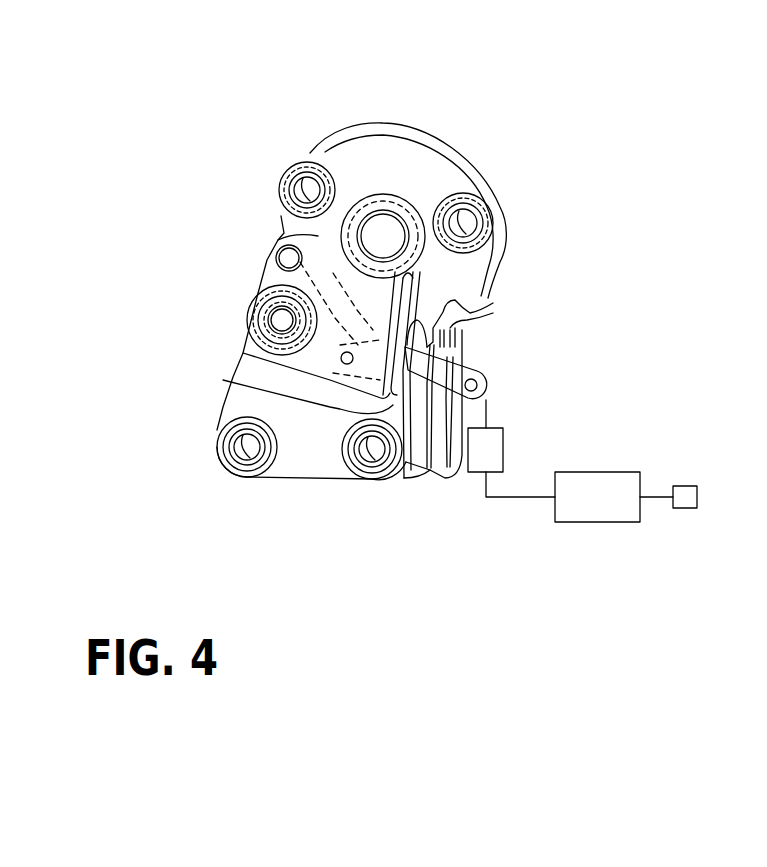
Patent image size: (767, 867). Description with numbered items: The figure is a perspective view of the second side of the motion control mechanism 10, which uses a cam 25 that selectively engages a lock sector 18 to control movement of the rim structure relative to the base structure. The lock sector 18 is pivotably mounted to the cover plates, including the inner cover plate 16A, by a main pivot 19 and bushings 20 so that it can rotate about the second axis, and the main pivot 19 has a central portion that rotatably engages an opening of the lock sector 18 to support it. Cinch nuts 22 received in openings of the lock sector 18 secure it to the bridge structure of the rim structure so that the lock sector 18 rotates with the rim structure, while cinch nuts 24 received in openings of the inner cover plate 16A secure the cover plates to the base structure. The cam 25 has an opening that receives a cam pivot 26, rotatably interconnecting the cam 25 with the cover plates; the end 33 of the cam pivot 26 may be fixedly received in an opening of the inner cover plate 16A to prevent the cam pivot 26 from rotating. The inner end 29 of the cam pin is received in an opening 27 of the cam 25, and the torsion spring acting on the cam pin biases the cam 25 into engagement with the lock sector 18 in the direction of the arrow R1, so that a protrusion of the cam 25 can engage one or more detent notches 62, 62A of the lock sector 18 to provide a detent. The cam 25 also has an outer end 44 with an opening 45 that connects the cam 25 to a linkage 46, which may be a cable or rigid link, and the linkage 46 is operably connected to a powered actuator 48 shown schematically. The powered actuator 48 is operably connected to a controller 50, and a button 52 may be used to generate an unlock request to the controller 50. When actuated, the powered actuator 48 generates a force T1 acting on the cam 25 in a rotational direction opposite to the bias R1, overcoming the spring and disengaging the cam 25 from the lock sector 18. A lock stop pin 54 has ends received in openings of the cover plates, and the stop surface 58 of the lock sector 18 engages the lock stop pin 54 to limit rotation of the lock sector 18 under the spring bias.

The motion control mechanism 10 is at (535, 237).
The inner cover plate 16A is at (290, 478).
The lock sector 18 is at (432, 128).
The main pivot 19 is at (397, 230).
The bushings 20 is at (372, 192).
The cinch nuts 22 is at (292, 185).
The cinch nuts 24 is at (218, 440).
The cam 25 is at (485, 368).
The cam pivot 26 is at (272, 327).
The opening 27 is at (333, 367).
The inner end 29 is at (341, 359).
The end 33 is at (272, 310).
The outer end 44 is at (505, 372).
The opening 45 is at (498, 352).
The linkage 46 is at (480, 407).
The powered actuator 48 is at (503, 447).
The controller 50 is at (613, 522).
The button 52 is at (685, 508).
The lock stop pin 54 is at (287, 260).
The stop surface 58 is at (283, 238).
The detent notch 62 is at (478, 352).
The detent notch 62A is at (483, 302).
The rotational bias R1 is at (535, 360).
The force T1 is at (498, 383).